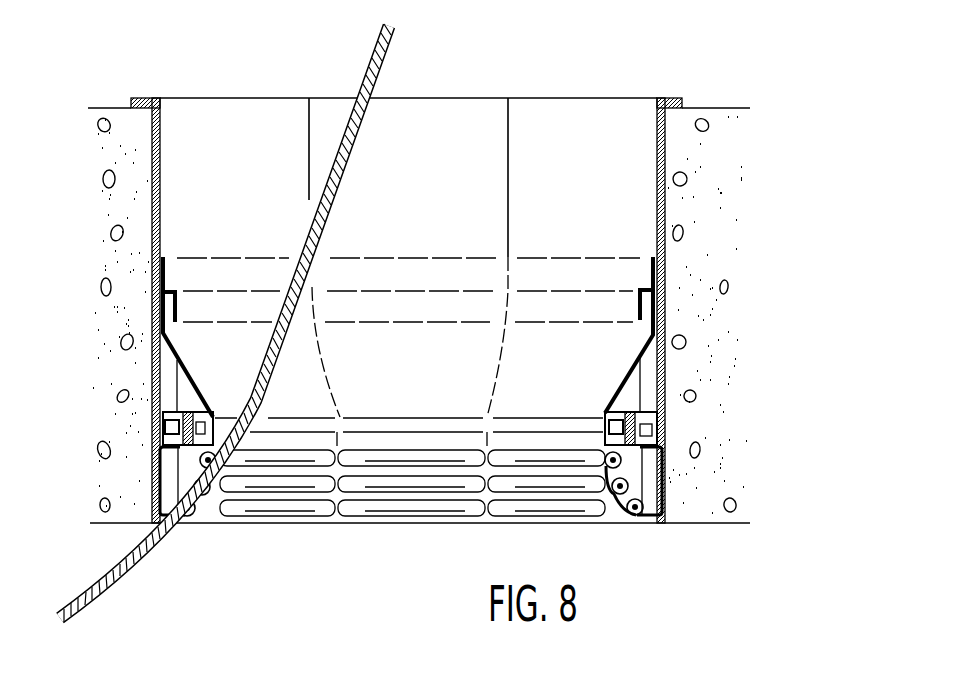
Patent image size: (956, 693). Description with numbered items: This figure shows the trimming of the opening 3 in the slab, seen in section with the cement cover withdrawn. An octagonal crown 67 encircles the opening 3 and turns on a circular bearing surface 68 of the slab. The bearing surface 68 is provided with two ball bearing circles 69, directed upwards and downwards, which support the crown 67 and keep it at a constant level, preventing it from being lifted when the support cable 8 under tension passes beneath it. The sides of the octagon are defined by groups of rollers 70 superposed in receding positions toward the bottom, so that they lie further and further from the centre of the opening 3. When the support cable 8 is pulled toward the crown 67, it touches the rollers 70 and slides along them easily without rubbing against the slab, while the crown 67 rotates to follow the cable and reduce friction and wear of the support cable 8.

The opening 3 is at (215, 153).
The support cable 8 is at (370, 82).
The octagonal crown 67 is at (593, 388).
The ball bearing circles 69 is at (660, 427).
The circular bearing surface 68 is at (672, 447).
The rollers 70 is at (187, 516).